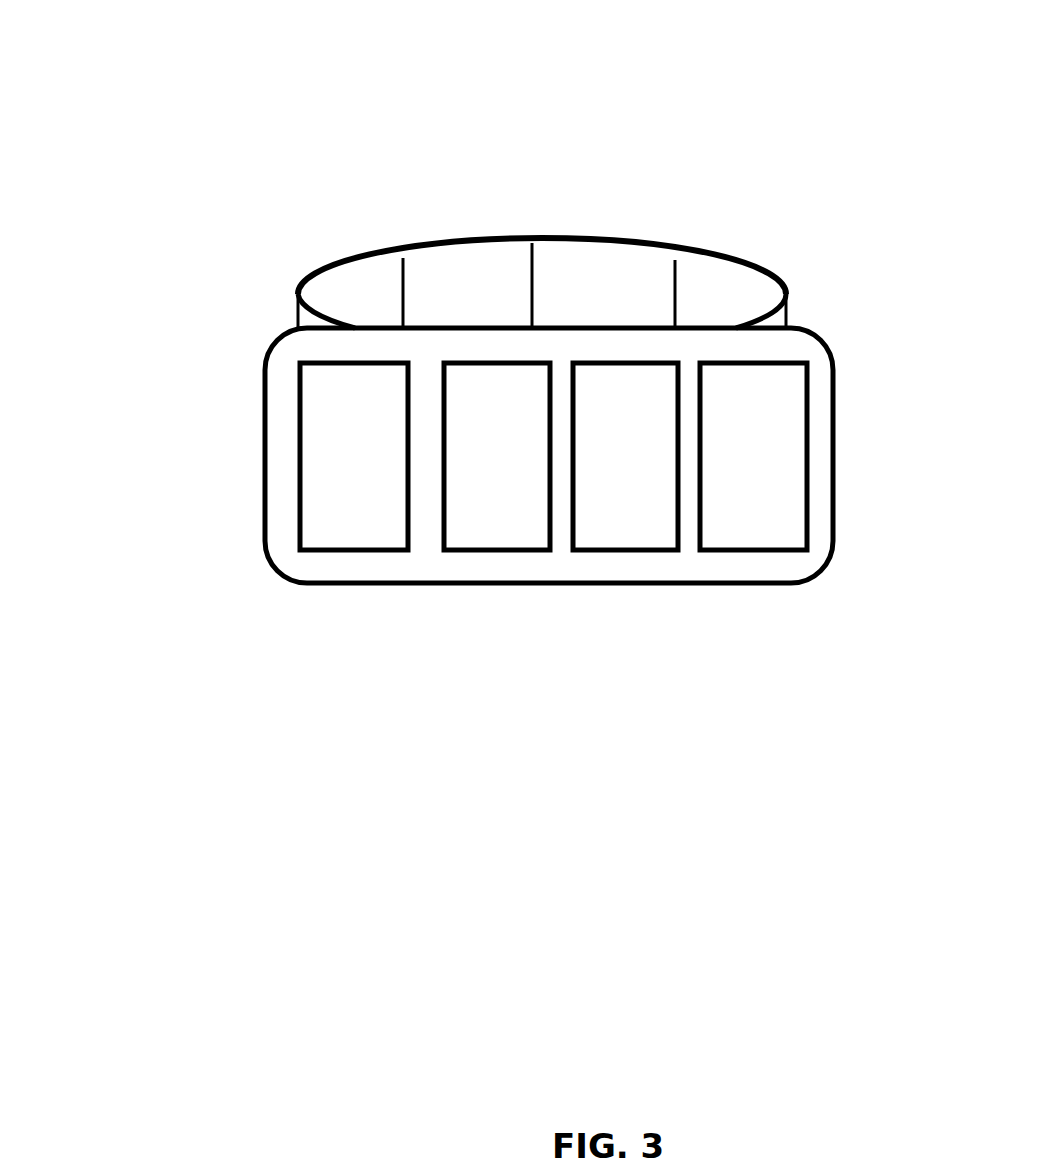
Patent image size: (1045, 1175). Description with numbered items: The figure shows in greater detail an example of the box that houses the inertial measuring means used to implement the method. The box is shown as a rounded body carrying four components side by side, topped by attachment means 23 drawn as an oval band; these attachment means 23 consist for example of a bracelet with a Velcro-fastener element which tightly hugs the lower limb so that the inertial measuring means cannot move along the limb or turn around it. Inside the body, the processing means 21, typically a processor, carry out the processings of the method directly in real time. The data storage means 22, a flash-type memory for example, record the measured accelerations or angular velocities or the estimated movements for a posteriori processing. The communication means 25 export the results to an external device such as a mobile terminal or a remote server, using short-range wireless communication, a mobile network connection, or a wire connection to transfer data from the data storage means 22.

The processing means 21 is at (534, 553).
The data storage means 22 is at (633, 553).
The attachment means 23 is at (606, 236).
The communication means 25 is at (809, 464).